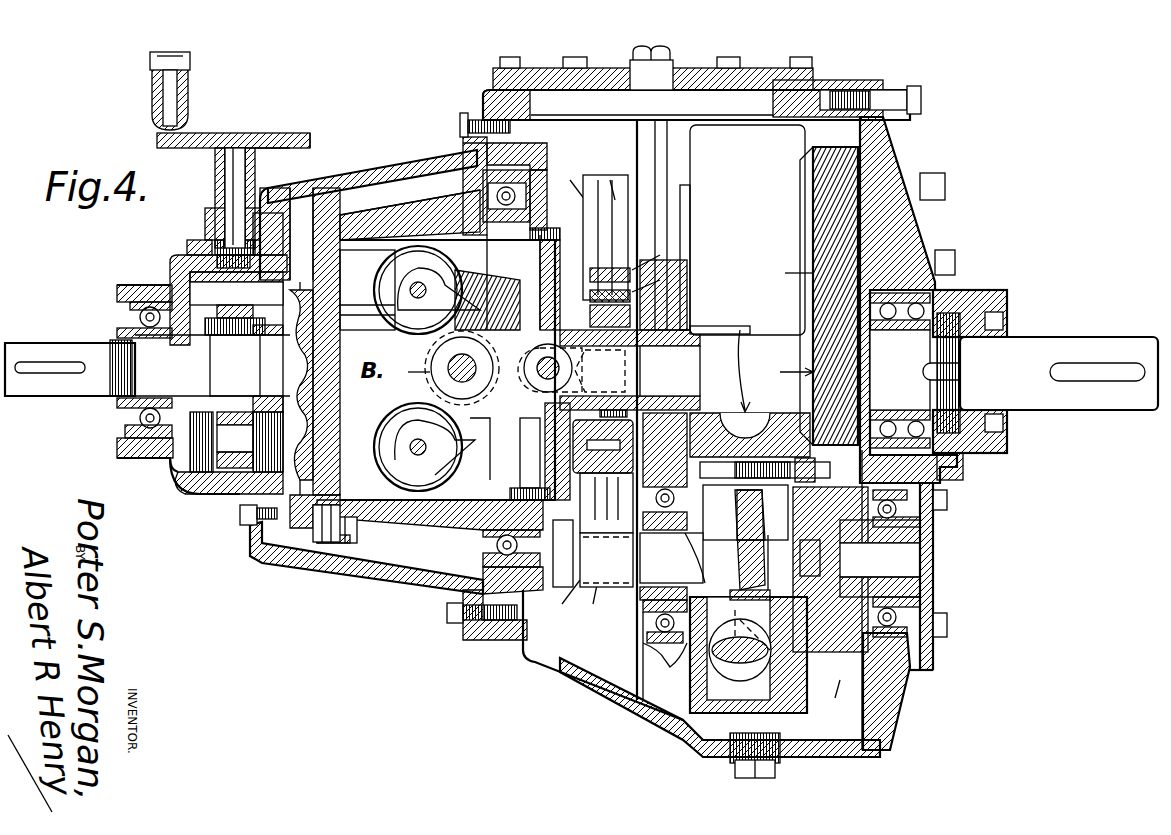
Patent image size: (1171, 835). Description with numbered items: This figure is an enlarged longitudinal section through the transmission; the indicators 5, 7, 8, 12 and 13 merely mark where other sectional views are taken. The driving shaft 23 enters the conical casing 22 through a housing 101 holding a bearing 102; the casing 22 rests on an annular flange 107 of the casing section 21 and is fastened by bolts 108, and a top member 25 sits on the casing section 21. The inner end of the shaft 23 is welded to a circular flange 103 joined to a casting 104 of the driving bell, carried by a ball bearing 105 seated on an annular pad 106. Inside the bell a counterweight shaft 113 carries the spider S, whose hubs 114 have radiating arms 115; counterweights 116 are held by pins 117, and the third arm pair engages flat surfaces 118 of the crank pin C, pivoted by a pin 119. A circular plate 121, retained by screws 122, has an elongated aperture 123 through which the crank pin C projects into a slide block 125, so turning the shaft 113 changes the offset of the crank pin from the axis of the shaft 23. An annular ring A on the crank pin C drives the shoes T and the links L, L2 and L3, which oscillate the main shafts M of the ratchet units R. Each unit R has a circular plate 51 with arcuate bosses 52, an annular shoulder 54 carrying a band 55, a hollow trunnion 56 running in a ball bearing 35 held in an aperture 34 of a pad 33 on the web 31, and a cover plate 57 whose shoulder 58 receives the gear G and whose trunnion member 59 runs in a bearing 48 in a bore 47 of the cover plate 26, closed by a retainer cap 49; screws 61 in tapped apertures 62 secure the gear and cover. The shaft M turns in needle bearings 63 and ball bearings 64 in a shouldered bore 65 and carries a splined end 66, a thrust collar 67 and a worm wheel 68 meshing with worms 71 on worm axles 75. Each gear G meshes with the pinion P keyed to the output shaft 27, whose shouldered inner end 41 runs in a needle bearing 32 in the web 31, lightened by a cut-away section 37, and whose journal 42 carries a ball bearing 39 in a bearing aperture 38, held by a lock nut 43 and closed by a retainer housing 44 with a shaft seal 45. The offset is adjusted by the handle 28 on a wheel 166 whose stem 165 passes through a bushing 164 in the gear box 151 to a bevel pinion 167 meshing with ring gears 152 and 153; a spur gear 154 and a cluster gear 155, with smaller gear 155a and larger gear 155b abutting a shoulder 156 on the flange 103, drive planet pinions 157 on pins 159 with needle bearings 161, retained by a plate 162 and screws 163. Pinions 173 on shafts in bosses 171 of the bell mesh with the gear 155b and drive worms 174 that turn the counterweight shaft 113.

The section line 5 is at (858, 78).
The section line 7 / bolt 7 is at (743, 700).
The section line 8 is at (483, 110).
The section line 12 is at (233, 110).
The section line 13 is at (333, 110).
The casing section 21 is at (548, 112).
The conical casing 22 is at (388, 172).
The driving shaft 23 is at (45, 345).
The top plate 25 is at (745, 72).
The cover plate 26 is at (885, 82).
The output shaft 27 is at (1072, 340).
The handle 28 is at (150, 95).
The web 31 is at (675, 184).
The needle bearing 32 is at (672, 328).
The pads 33 is at (680, 204).
The apertures 34 is at (645, 600).
The ball bearings 35 is at (655, 625).
The cut-away section 37 is at (655, 155).
The shouldered bearing aperture 38 is at (888, 322).
The ball bearing 39 is at (916, 322).
The shouldered inner end 41 is at (630, 370).
The journal 42 is at (926, 373).
The lock nut 43 is at (935, 400).
The retainer housing 44 is at (990, 300).
The shaft seal 45 is at (1005, 420).
The bores 47 is at (945, 490).
The bearings 48 is at (920, 500).
The retainer caps 49 is at (935, 542).
The circular plate 51 is at (690, 705).
The arcuate bosses 52 is at (713, 440).
The annular shoulder 54 is at (700, 720).
The cylindrical band 55 is at (720, 700).
The hollow trunnion 56 is at (633, 540).
The circular cover plate 57 is at (795, 440).
The annular shoulder 58 is at (896, 563).
The hub or trunnion member 59 is at (933, 570).
The screws 61 is at (764, 511).
The tapped apertures 62 is at (745, 511).
The needle bearings 63 is at (737, 601).
The ball bearings 64 is at (810, 558).
The shouldered bore 65 is at (856, 569).
The splined outer end 66 is at (628, 580).
The thrust collar 67 is at (746, 540).
The worm wheel 68 is at (778, 546).
The worms 71 is at (760, 665).
The worm axle 75 is at (730, 668).
The housing 101 is at (118, 300).
The bearing 102 is at (142, 300).
The circular flange 103 is at (350, 212).
The casting 104 is at (360, 232).
The ball bearing 105 is at (490, 195).
The annular pad 106 is at (480, 575).
The annular flange 107 is at (470, 650).
The bolts 108 is at (455, 630).
The counterweight shaft 113 is at (485, 445).
The hub 114 is at (425, 378).
The radiating arms 115 is at (430, 395).
The counterweights 116 is at (415, 268).
The pins 117 is at (418, 296).
The flat surfaces 118 is at (540, 345).
The pin 119 is at (540, 378).
The circular plate 121 is at (545, 460).
The screws 122 is at (515, 500).
The elongated aperture 123 is at (540, 440).
The block 125 is at (575, 280).
The gear box 151 is at (178, 478).
The ring gear 152 is at (185, 496).
The ring gear 153 is at (243, 508).
The spur gear 154 is at (225, 385).
The cluster gear 155 is at (367, 292).
The smaller cluster gear 155a is at (280, 415).
The larger cluster gear 155b is at (285, 318).
The shoulder 156 is at (305, 330).
The planet pinions 157 is at (340, 258).
The pins 159 is at (236, 363).
The needle bearings 161 is at (215, 330).
The plate 162 is at (262, 545).
The screws 163 is at (260, 525).
The bushing 164 is at (215, 215).
The stem 165 is at (225, 168).
The wheel 166 is at (282, 155).
The bevel pinion 167 is at (205, 250).
The bosses 171 is at (367, 290).
The pinions 173 is at (300, 234).
The worms 174 is at (478, 278).
The annular ring A is at (634, 296).
The crank pin C is at (600, 371).
The gear G is at (813, 432).
The links L is at (591, 389).
The lever L2 is at (605, 226).
The lever L3 is at (598, 549).
The main shafts M is at (672, 558).
The pinion P is at (788, 370).
The ratchet mechanisms R is at (741, 371).
The spider S is at (434, 368).
The shoes T is at (635, 260).